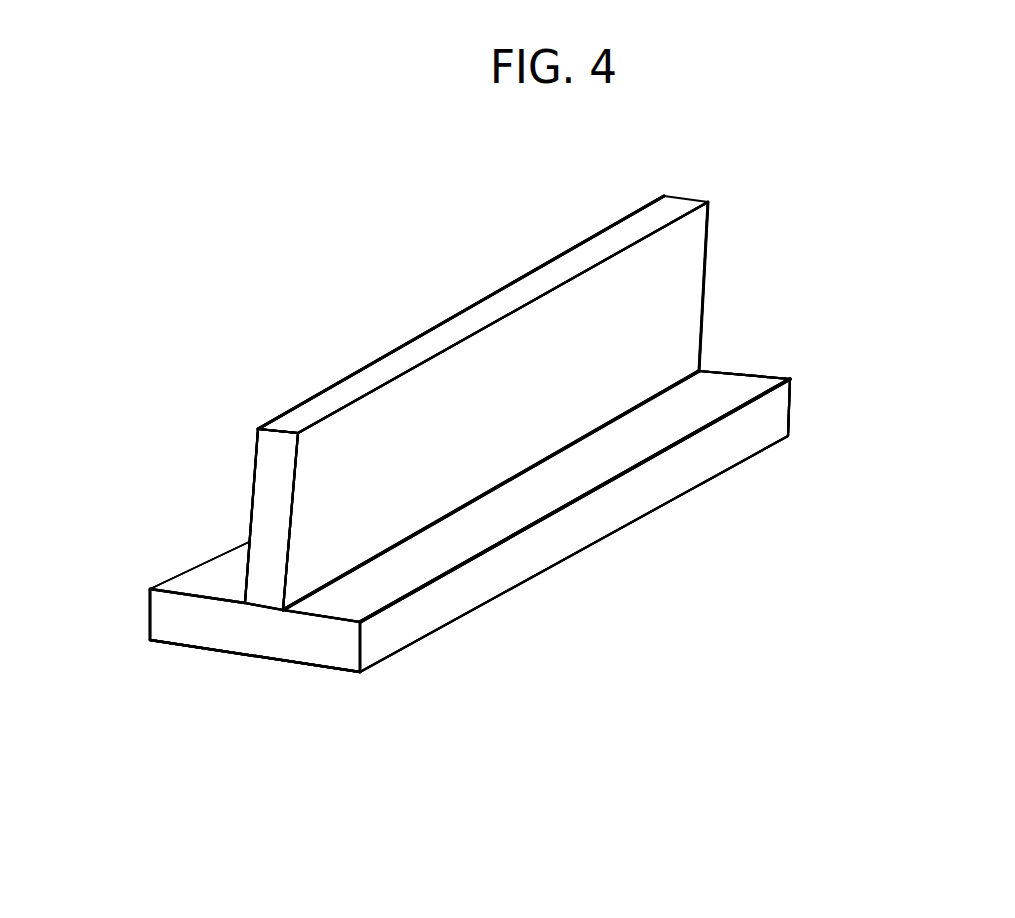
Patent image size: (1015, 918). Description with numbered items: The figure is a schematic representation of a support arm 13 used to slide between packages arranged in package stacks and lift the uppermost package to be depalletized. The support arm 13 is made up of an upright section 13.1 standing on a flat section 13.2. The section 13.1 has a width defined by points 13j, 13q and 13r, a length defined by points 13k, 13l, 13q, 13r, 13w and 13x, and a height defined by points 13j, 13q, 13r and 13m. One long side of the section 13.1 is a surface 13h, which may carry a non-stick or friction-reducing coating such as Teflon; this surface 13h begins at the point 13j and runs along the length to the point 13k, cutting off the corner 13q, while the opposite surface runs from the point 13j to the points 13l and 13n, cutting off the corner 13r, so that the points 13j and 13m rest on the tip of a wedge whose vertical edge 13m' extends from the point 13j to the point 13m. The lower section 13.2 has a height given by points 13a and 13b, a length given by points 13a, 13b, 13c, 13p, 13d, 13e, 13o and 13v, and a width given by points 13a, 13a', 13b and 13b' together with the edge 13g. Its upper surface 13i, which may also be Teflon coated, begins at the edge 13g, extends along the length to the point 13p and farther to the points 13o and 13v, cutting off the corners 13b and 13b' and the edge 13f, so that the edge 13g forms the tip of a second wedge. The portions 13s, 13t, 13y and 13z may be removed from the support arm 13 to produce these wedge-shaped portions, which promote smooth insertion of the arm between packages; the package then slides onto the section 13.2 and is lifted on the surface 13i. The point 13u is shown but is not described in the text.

The support arm 13 is at (420, 290).
The section 13.1 is at (263, 487).
The section 13.2 is at (195, 625).
The point 13a is at (325, 676).
The point 13a' is at (107, 640).
The point 13b is at (354, 591).
The point 13b' is at (136, 613).
The point 13c is at (485, 605).
The point 13d is at (687, 494).
The point 13e is at (647, 458).
The edge 13f is at (797, 412).
The edge 13g is at (332, 668).
The surface 13h is at (657, 317).
The surface 13i is at (728, 392).
The point 13j is at (258, 427).
The point 13k is at (390, 383).
The point 13l is at (350, 373).
The point 13m is at (255, 695).
The edge 13m' is at (187, 516).
The point 13n is at (377, 557).
The point 13o is at (702, 368).
The point 13p is at (520, 527).
The point 13q is at (300, 437).
The point 13r is at (257, 428).
The portion 13s is at (257, 428).
The portion 13t is at (292, 425).
The lower end corner 13u is at (790, 436).
The point 13v is at (790, 378).
The point 13w is at (709, 202).
The point 13x is at (665, 194).
The portion 13y is at (332, 606).
The portion 13z is at (200, 580).